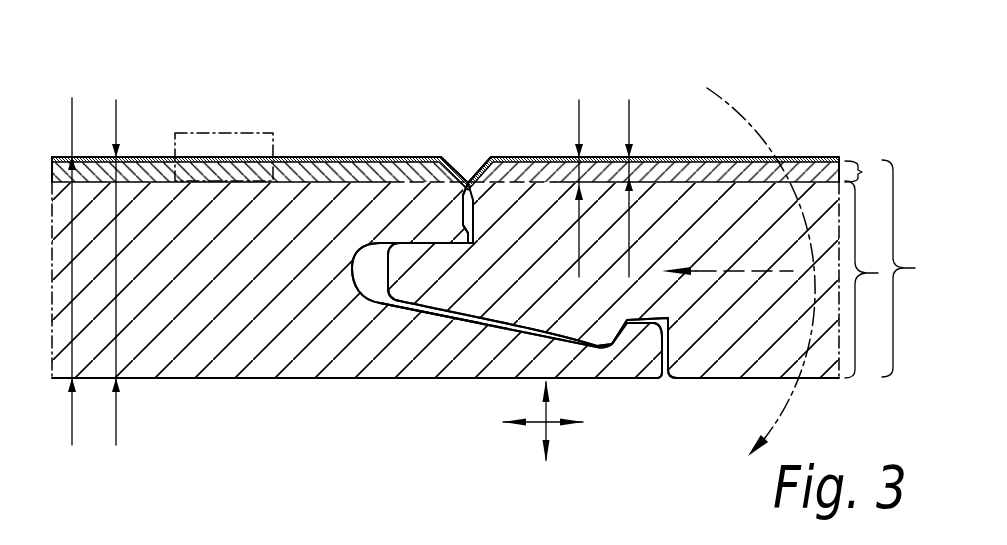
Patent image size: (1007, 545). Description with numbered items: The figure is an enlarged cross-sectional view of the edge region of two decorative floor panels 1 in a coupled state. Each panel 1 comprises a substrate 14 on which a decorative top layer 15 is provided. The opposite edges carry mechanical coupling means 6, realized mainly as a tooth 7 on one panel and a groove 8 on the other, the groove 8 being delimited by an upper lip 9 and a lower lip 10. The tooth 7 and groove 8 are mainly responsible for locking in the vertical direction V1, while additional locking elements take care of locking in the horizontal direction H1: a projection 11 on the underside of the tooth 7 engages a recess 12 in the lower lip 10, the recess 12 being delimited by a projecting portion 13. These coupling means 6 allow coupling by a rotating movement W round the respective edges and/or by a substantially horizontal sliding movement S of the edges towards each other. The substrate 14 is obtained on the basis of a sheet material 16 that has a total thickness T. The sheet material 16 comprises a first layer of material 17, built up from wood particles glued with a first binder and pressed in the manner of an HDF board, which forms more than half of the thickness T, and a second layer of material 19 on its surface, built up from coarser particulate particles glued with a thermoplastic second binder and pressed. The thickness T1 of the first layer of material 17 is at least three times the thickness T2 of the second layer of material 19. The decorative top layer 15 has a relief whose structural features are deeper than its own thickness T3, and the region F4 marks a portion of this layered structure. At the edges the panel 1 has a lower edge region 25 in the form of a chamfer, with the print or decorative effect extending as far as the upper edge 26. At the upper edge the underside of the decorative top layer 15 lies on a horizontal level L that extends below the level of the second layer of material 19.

The decorative panel 1 is at (797, 90).
The mechanical coupling means 6 is at (378, 338).
The tooth 7 is at (487, 283).
The groove 8 is at (367, 270).
The upper lip 9 is at (410, 220).
The lower lip 10 is at (470, 360).
The projection 11 is at (570, 327).
The recess 12 is at (568, 340).
The projecting portion 13 is at (637, 340).
The substrate 14 is at (217, 260).
The decorative top layer 15 is at (312, 157).
The sheet material 16 is at (915, 268).
The first layer of material 17 is at (878, 273).
The second layer of material 19 is at (861, 171).
The lower edge region 25 is at (468, 183).
The upper edge 26 is at (437, 185).
The force region F4 is at (220, 133).
The horizontal direction H1 is at (547, 423).
The horizontal level L is at (527, 182).
The sliding movement S is at (703, 270).
The thickness of the sheet material T is at (127, 269).
The thickness of the first layer of material T1 is at (85, 269).
The thickness of the second layer of material T2 is at (596, 187).
The thickness of the decorative top layer T3 is at (647, 186).
The vertical direction V1 is at (544, 410).
The rotating movement W is at (739, 110).